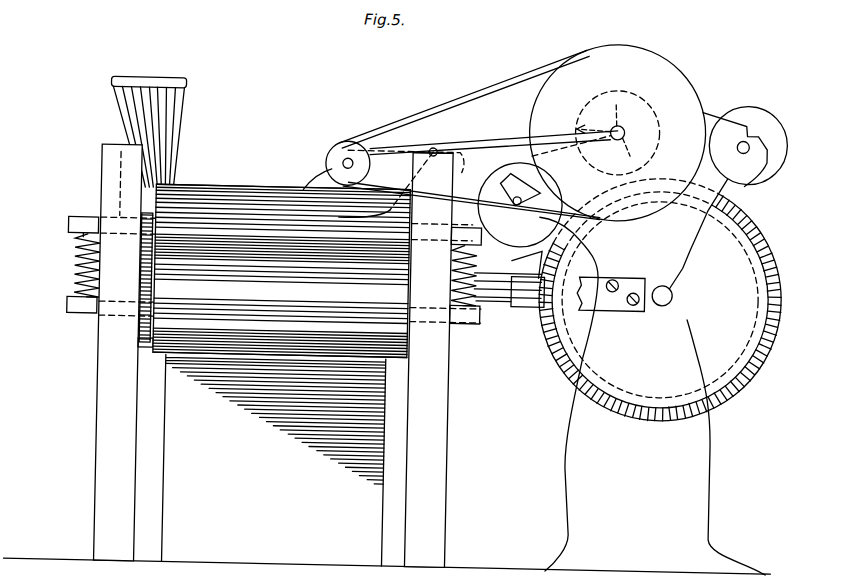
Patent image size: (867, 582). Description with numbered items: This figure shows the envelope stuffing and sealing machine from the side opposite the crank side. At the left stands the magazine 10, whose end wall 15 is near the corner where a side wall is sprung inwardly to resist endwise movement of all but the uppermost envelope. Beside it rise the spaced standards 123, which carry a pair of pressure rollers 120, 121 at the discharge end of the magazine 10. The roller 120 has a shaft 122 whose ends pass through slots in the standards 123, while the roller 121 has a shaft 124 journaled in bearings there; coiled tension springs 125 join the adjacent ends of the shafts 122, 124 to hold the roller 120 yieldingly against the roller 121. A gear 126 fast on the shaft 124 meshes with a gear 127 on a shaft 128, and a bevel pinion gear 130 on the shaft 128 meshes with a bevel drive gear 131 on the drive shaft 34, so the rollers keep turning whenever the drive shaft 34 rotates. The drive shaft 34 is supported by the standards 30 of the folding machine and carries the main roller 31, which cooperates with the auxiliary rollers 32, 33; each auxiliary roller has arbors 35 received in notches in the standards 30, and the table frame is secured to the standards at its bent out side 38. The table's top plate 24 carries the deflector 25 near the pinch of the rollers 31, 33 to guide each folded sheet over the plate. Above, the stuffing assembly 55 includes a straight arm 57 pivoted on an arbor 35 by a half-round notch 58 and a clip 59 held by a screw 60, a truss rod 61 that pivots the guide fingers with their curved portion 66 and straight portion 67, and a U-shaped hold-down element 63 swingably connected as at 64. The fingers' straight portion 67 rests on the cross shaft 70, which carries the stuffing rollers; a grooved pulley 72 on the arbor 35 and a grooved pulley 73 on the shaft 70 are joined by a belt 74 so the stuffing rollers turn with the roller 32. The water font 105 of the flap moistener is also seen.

The magazine 10 is at (166, 438).
The end wall 15 is at (246, 560).
The top plate 24 is at (501, 272).
The deflector 25 is at (521, 256).
The standards 30 is at (702, 494).
The main roller 31 is at (651, 299).
The auxiliary roller 32 is at (620, 88).
The auxiliary roller 33 is at (509, 162).
The drive shaft 34 is at (672, 291).
The arbors 35 is at (515, 196).
The bent out side 38 is at (614, 280).
The assembly 55 is at (455, 143).
The straight member 57 is at (469, 141).
The half-round notch 58 is at (623, 140).
The clip 59 is at (610, 116).
The screw 60 is at (571, 123).
The truss rod 61 is at (427, 148).
The bracer and envelope hold down element 63 is at (300, 190).
The pivotal connection 64 is at (443, 168).
The finger portion 66 is at (364, 220).
The finger portion 67 is at (377, 150).
The shaft 70 is at (322, 165).
The grooved pulley 72 is at (692, 94).
The grooved pulley 73 is at (331, 154).
The belt 74 is at (484, 90).
The water font 105 is at (116, 118).
The pressure roller 120 is at (282, 259).
The pressure roller 121 is at (232, 183).
The shaft 122 is at (78, 224).
The standards 123 is at (98, 478).
The shaft 124 is at (68, 316).
The coiled tension springs 125 is at (73, 273).
The gear 126 is at (137, 353).
The gear 127 is at (139, 271).
The shaft 128 is at (492, 302).
The bevel pinion gear 130 is at (524, 305).
The bevel drive gear 131 is at (551, 338).